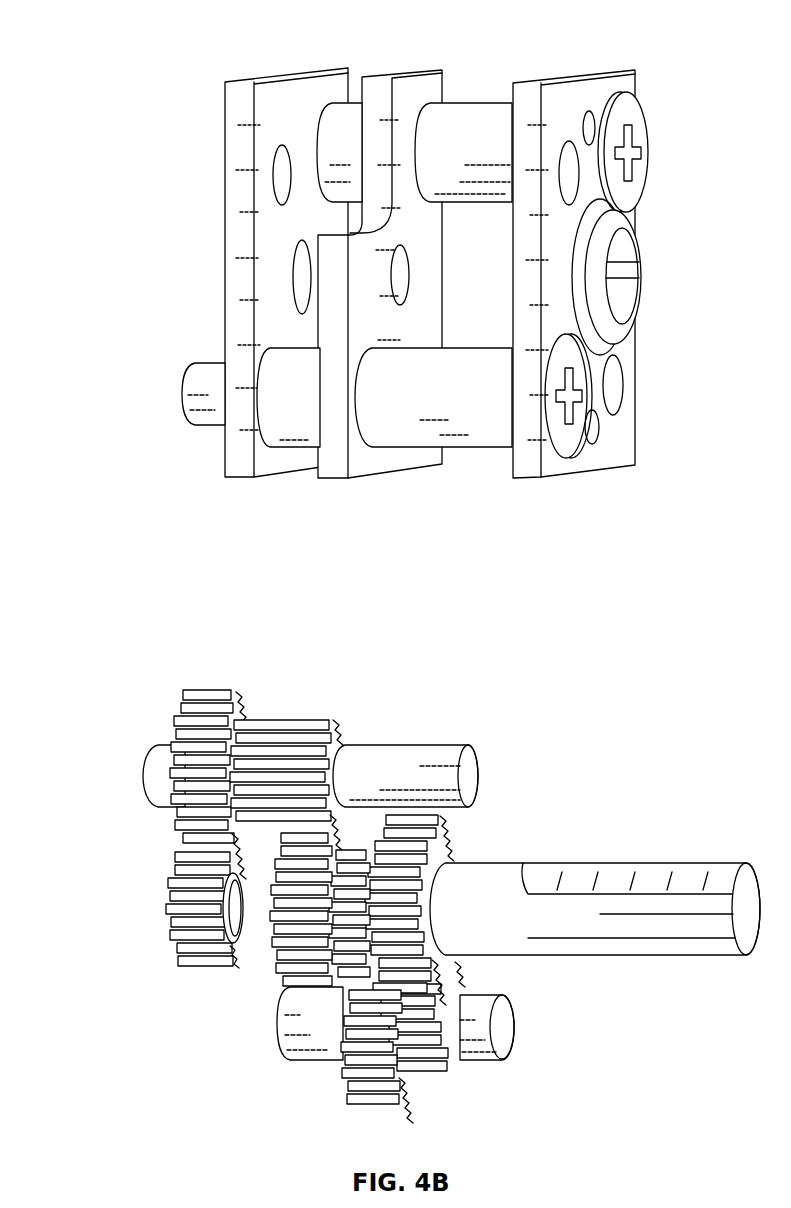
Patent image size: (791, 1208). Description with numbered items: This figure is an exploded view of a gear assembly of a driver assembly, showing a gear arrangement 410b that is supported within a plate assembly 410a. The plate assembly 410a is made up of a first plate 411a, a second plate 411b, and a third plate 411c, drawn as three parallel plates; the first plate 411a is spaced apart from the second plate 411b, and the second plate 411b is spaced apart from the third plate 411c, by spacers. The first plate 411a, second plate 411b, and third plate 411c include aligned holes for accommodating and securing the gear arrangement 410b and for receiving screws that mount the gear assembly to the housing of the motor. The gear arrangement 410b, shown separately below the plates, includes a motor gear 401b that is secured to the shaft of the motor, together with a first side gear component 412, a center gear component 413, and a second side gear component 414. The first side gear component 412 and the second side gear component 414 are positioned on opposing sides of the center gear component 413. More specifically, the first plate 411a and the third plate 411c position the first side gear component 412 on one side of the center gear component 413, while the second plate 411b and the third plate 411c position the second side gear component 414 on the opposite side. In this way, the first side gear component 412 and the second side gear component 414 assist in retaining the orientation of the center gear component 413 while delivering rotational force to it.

The plate assembly 410a is at (128, 210).
The gear arrangement 410b is at (122, 664).
The first plate 411a is at (236, 103).
The second plate 411b is at (410, 70).
The third plate 411c is at (637, 78).
The first side gear component 412 is at (470, 108).
The motor gear 401b is at (167, 918).
The center gear component 413 is at (230, 988).
The second side gear component 414 is at (332, 1073).